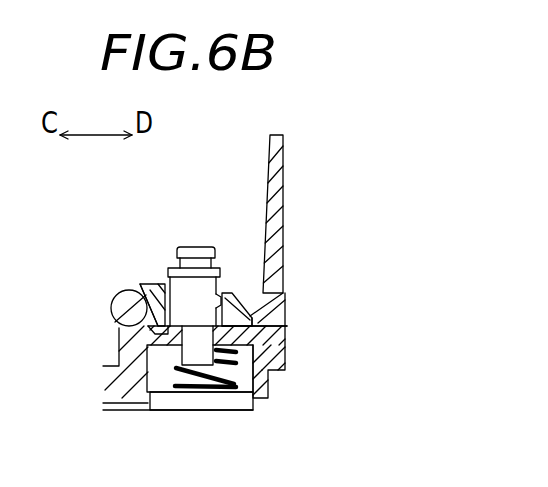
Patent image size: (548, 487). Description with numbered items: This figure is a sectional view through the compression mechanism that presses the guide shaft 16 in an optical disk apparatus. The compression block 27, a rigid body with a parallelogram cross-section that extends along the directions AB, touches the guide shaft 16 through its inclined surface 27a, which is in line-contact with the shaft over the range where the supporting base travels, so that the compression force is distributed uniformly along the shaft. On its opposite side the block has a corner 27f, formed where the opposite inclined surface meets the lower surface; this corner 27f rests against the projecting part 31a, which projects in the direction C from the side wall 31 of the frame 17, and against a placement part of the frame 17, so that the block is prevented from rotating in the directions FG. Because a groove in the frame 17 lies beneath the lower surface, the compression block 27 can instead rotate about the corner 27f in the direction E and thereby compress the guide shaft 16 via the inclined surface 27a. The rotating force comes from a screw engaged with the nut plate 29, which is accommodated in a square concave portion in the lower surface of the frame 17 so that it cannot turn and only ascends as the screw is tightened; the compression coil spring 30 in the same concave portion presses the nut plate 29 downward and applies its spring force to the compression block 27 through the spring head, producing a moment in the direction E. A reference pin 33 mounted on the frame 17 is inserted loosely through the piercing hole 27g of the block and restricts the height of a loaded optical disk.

The guide shaft 16 is at (112, 302).
The frame 17 is at (127, 413).
The compression block 27 is at (145, 283).
The inclined surface 27a is at (120, 320).
The corner 27f is at (285, 328).
The piercing hole 27g is at (218, 298).
The nut plate 29 is at (240, 408).
The compression coil spring 30 is at (253, 380).
The side wall 31 is at (283, 259).
The projecting part 31a is at (283, 310).
The reference pin 33 is at (168, 280).